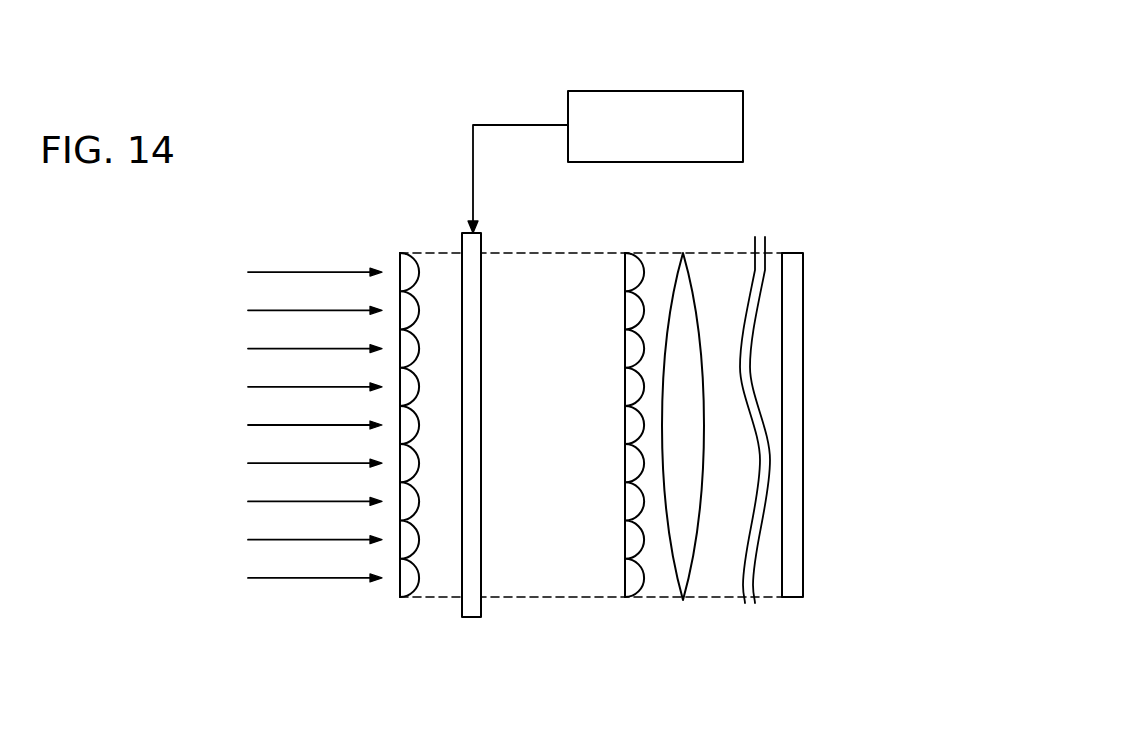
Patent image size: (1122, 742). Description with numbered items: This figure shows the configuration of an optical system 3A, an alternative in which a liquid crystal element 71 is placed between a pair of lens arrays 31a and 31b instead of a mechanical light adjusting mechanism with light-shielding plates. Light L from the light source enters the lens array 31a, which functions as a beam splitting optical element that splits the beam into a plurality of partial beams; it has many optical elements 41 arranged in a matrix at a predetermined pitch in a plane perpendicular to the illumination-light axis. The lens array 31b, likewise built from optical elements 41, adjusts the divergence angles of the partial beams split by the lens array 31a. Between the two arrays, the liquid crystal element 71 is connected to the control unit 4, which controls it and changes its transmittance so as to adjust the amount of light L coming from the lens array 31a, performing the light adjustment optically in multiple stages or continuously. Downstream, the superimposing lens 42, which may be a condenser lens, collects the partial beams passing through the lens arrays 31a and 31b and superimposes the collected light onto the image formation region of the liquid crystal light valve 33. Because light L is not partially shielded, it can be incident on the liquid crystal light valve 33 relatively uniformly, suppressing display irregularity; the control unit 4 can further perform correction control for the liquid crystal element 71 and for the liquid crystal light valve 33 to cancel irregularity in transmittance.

The control unit 4 is at (660, 90).
The optical system 3A is at (857, 197).
The light L is at (275, 266).
The optical element 41 is at (400, 413).
The lens array 31a is at (402, 610).
The lens array 31b is at (635, 613).
The liquid crystal element 71 is at (471, 618).
The superimposing lens 42 is at (683, 250).
The liquid crystal light valve 33 is at (793, 254).